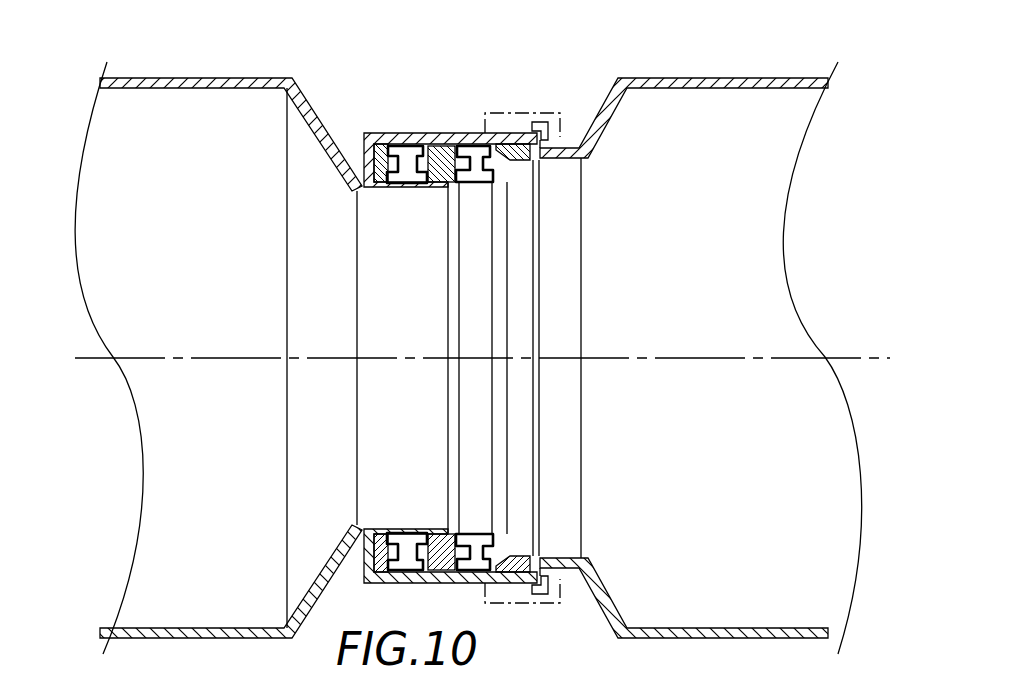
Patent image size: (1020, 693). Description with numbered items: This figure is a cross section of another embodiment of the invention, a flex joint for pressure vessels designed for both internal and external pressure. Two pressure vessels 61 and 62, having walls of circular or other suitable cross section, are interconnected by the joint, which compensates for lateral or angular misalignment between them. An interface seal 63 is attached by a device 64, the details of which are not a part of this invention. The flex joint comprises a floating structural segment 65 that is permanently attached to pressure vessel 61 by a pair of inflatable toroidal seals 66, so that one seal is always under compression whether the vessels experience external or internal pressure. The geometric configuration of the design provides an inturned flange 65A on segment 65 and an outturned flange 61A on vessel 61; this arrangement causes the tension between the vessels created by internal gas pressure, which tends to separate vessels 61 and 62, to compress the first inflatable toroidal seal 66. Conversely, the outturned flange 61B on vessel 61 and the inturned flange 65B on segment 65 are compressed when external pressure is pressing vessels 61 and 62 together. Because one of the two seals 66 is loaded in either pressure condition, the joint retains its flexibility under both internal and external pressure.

The pressure vessel 61 is at (201, 78).
The pressure vessel 62 is at (741, 78).
The interface seal 63 is at (548, 123).
The device 64 is at (504, 113).
The floating structural segment 65 is at (451, 133).
The inturned flange 65A is at (358, 192).
The inturned flange 65B is at (500, 163).
The inflatable toroidal seals 66 is at (412, 100).
The outturned flange 61A is at (446, 170).
The outturned flange 61B is at (448, 183).